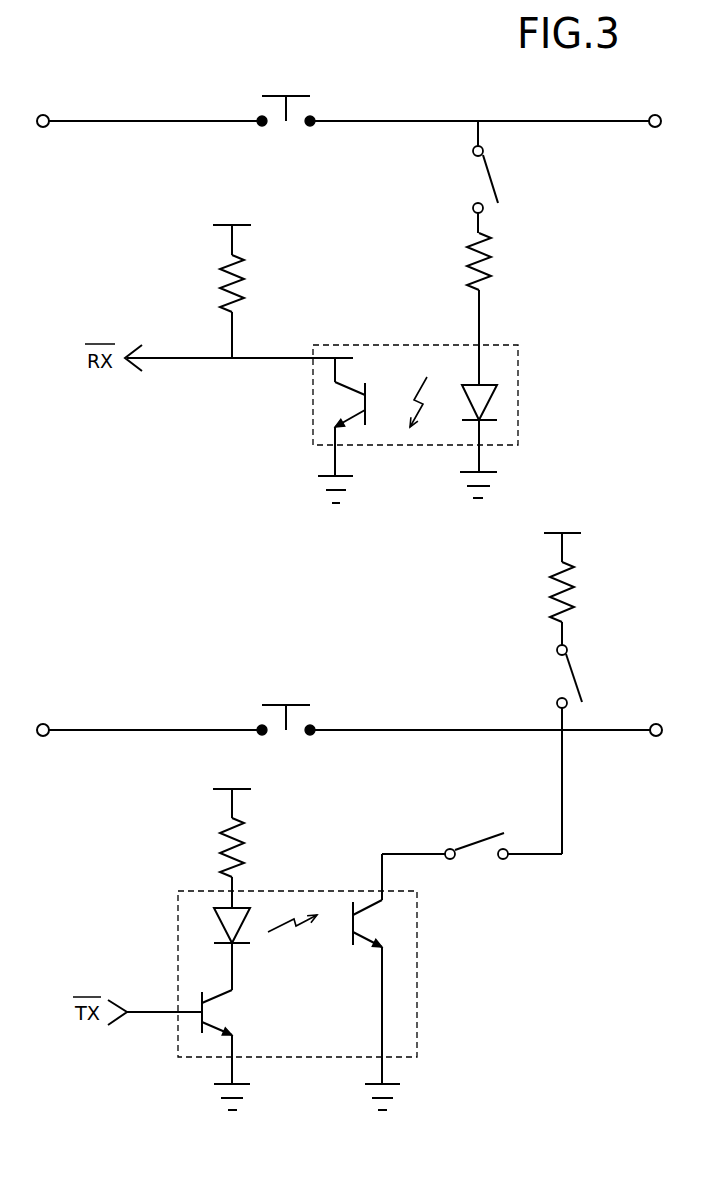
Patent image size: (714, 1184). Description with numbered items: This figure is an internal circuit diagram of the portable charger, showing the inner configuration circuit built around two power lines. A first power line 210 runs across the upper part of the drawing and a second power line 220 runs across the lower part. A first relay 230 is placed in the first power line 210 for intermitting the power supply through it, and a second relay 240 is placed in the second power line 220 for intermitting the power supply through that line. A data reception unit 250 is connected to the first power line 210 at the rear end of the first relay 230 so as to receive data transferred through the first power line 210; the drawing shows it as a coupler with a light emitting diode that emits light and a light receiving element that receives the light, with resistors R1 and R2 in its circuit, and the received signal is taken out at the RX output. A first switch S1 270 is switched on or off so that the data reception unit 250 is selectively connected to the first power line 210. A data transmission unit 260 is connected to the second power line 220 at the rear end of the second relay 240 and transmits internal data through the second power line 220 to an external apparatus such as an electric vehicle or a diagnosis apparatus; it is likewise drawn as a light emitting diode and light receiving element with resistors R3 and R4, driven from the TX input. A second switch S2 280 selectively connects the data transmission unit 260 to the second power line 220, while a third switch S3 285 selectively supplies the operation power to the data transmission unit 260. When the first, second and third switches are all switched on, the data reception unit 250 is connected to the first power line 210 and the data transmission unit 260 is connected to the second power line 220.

The first power line 210 is at (43, 115).
The second power line 220 is at (43, 723).
The first relay 230 is at (278, 95).
The second relay 240 is at (278, 705).
The data reception unit 250 is at (518, 393).
The data transmission unit 260 is at (417, 973).
The first switch 270 is at (525, 177).
The second switch 280 is at (472, 832).
The third switch 285 is at (609, 749).
The resistor R1 is at (247, 278).
The resistor R2 is at (492, 259).
The resistor R3 is at (575, 587).
The resistor R4 is at (245, 842).